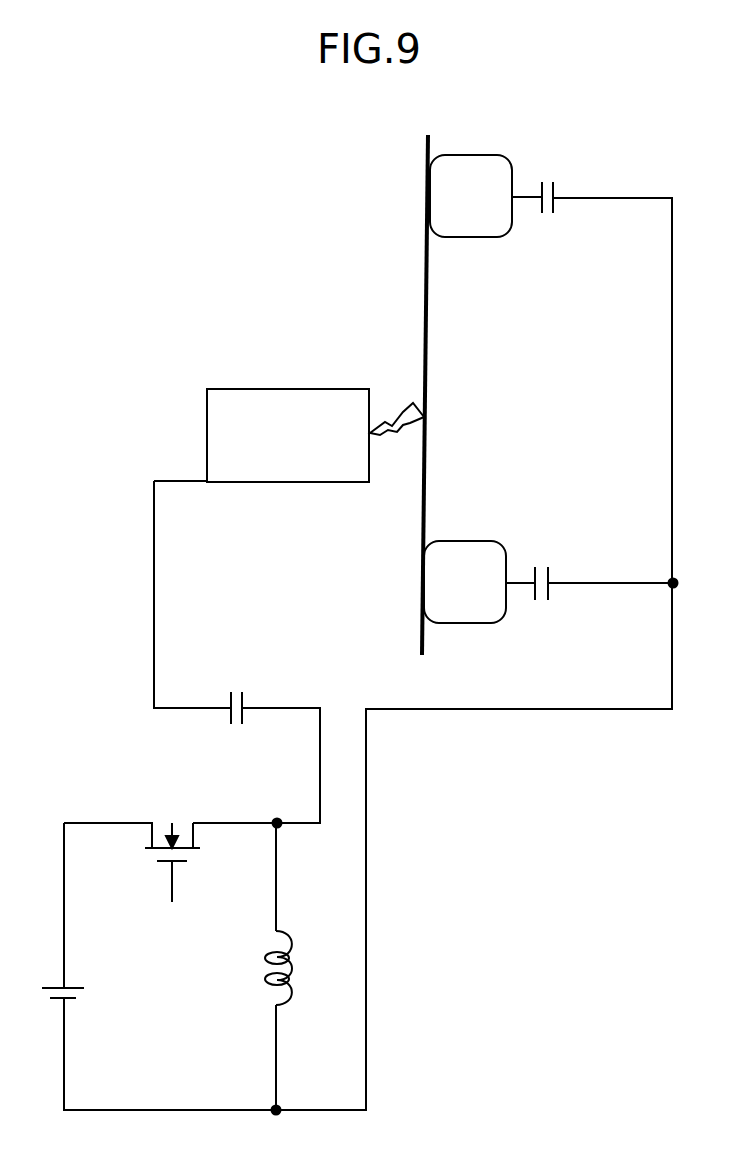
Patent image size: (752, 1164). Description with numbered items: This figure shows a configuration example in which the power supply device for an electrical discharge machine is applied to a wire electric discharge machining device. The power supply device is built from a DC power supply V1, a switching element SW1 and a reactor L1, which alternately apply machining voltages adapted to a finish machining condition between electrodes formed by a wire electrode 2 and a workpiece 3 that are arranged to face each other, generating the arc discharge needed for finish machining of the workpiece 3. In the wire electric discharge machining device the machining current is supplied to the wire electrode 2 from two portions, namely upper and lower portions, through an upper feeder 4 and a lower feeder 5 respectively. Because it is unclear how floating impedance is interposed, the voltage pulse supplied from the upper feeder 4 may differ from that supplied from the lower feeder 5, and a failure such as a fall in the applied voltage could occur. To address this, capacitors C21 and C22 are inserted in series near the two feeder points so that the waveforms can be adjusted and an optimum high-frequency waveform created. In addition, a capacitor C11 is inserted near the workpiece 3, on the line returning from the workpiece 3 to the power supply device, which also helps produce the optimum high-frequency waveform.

The wire electrode 2 is at (428, 146).
The workpiece 3 is at (316, 389).
The upper feeder 4 is at (470, 155).
The lower feeder 5 is at (463, 541).
The capacitor C21 is at (555, 190).
The capacitor C22 is at (549, 576).
The capacitor C11 is at (244, 700).
The switching element SW1 is at (183, 823).
The DC power supply V1 is at (72, 986).
The reactor L1 is at (264, 956).